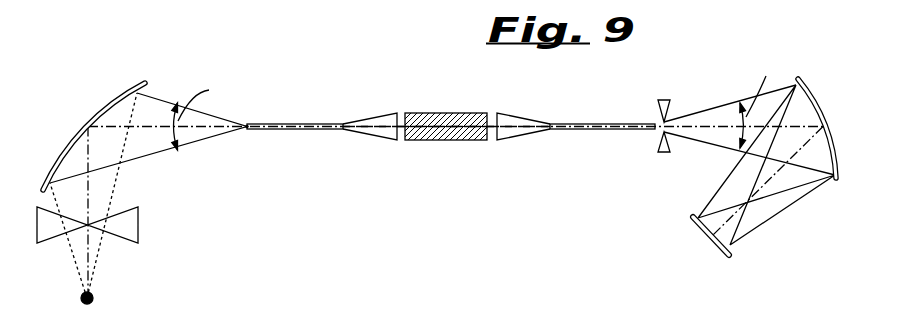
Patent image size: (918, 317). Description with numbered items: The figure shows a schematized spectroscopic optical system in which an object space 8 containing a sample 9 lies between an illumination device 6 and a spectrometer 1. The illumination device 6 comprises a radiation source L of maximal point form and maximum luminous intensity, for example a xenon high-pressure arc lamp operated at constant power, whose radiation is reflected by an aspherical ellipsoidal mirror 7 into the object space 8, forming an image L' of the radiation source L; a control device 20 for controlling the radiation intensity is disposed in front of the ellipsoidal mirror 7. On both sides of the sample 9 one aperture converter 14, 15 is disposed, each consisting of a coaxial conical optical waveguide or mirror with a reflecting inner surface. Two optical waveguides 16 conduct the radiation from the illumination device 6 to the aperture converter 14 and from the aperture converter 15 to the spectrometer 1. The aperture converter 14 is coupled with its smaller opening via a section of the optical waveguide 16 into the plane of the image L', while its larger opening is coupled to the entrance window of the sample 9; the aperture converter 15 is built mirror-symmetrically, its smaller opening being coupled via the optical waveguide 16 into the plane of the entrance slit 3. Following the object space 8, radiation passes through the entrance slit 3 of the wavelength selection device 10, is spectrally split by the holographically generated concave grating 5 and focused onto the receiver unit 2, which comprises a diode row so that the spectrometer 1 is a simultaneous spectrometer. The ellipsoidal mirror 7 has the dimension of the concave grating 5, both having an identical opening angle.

The spectrometer 1 is at (796, 240).
The receiver unit 2 is at (713, 247).
The entrance slit 3 is at (674, 104).
The holographically generated concave grating 5 is at (816, 101).
The illumination device 6 is at (205, 220).
The aspherical ellipsoidal mirror 7 is at (76, 132).
The object space 8 is at (436, 220).
The sample 9 is at (437, 138).
The wavelength selection device 10 is at (675, 193).
The aperture converter 14 is at (377, 116).
The aperture converter 15 is at (516, 133).
The optical waveguide 16 is at (311, 122).
The control device 20 is at (127, 230).
The radiation source L is at (109, 297).
The image of the radiation source L' is at (262, 101).